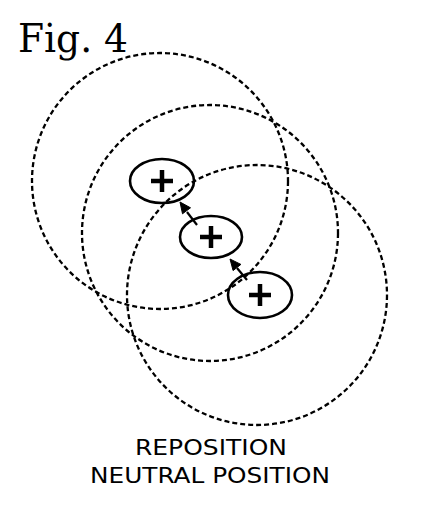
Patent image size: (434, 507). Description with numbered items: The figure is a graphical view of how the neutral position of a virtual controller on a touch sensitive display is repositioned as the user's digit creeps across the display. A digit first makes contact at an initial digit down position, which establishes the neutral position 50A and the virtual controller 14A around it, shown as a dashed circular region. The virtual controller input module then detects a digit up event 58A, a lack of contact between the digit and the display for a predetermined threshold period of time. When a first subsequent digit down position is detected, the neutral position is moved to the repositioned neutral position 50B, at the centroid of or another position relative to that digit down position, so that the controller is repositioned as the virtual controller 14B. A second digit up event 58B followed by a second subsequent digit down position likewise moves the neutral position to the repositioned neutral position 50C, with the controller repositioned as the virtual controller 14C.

The virtual controller 14A is at (341, 194).
The repositioned virtual controller 14B is at (299, 140).
The repositioned virtual controller 14C is at (238, 76).
The neutral position 50A is at (258, 271).
The repositioned neutral position 50B is at (213, 217).
The repositioned neutral position 50C is at (163, 158).
The digit up event 58A is at (237, 273).
The digit up event 58B is at (185, 221).